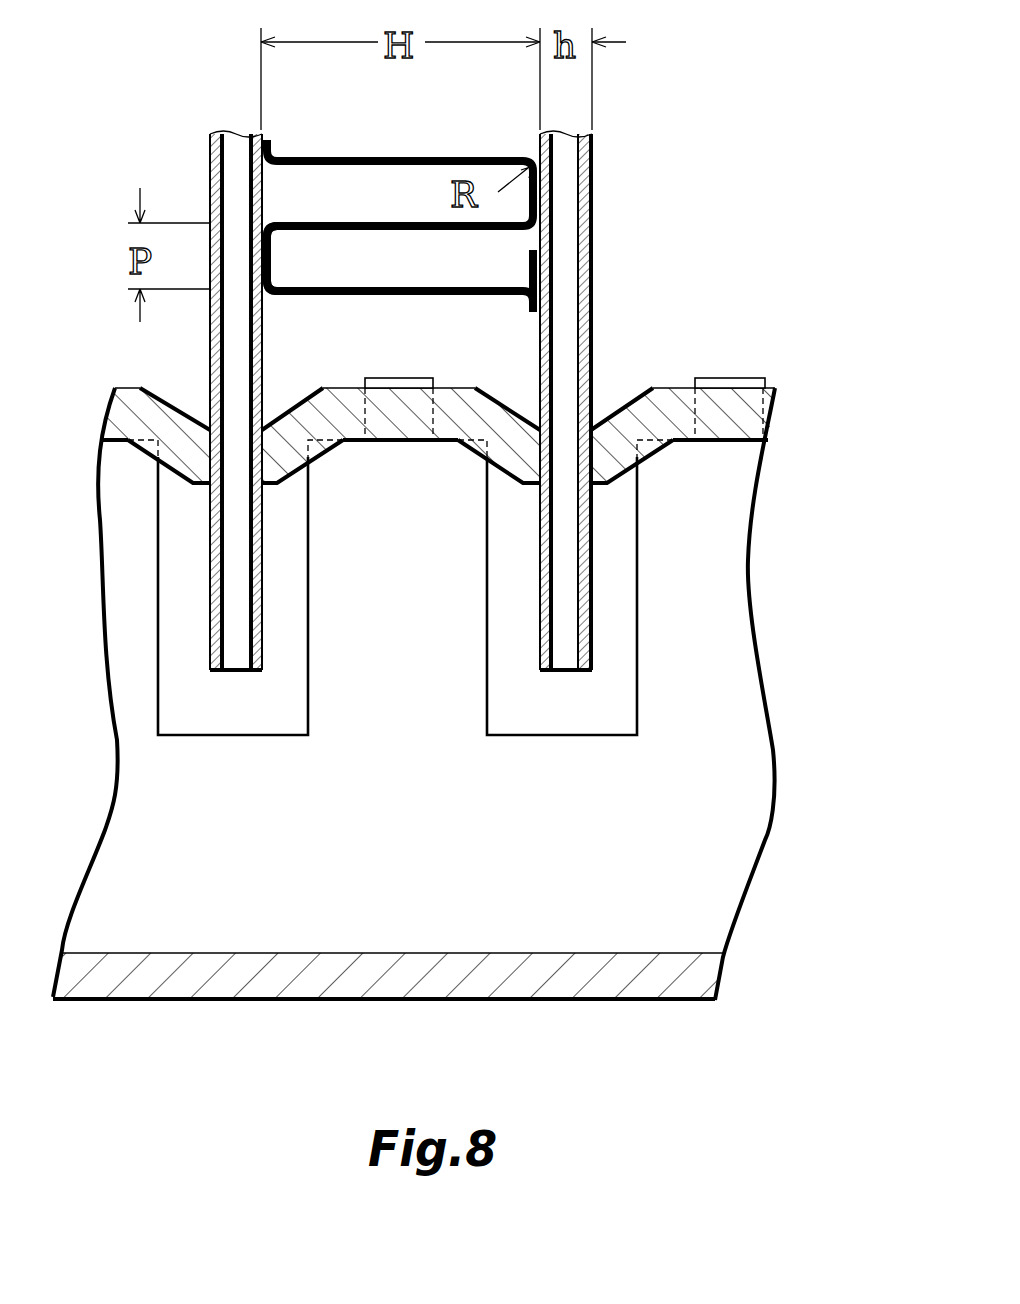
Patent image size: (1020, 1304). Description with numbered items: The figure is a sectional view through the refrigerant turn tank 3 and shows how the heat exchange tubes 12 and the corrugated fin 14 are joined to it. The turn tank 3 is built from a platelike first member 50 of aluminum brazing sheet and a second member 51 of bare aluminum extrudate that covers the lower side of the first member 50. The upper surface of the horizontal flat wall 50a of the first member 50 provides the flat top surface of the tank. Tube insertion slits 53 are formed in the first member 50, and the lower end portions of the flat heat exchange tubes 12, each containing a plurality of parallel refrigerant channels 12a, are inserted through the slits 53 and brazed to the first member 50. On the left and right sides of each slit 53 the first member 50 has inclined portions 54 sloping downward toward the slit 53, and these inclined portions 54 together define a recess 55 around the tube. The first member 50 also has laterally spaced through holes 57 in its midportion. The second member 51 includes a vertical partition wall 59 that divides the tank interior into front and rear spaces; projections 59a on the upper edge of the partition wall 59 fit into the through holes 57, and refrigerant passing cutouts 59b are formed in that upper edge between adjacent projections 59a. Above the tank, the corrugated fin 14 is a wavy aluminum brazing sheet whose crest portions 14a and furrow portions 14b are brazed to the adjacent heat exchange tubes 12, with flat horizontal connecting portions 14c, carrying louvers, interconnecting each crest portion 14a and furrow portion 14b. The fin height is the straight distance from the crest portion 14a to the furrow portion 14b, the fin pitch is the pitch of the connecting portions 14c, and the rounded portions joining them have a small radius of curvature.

The refrigerant turn tank 3 is at (184, 1007).
The heat exchange tube 12 is at (595, 332).
The refrigerant channel 12a is at (222, 156).
The corrugated fin 14 is at (438, 157).
The crest portion 14a is at (267, 256).
The furrow portion 14b is at (567, 193).
The connecting portion 14c is at (394, 222).
The first member 50 is at (747, 418).
The horizontal flat wall 50a is at (727, 393).
The second member 51 is at (697, 978).
The tube insertion slit 53 is at (567, 473).
The inclined portion 54 is at (527, 417).
The recess 55 is at (513, 425).
The through hole 57 is at (377, 390).
The partition wall 59 is at (713, 738).
The projection 59a is at (412, 378).
The refrigerant passing cutout 59b is at (213, 735).